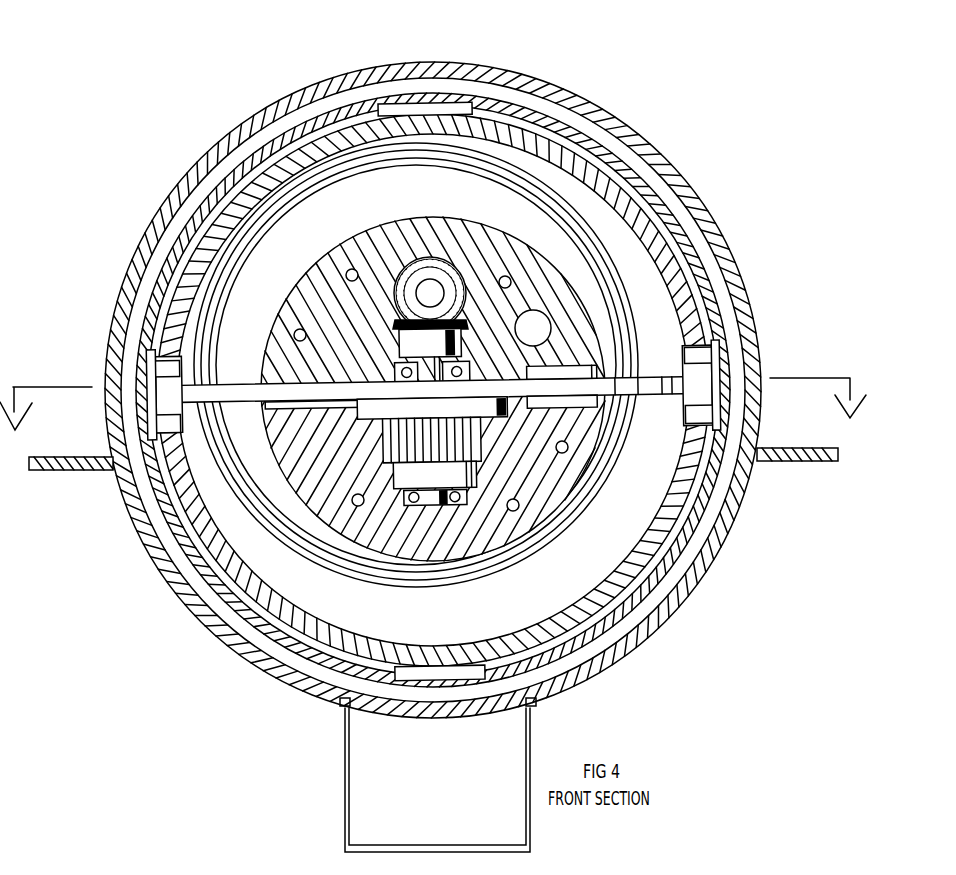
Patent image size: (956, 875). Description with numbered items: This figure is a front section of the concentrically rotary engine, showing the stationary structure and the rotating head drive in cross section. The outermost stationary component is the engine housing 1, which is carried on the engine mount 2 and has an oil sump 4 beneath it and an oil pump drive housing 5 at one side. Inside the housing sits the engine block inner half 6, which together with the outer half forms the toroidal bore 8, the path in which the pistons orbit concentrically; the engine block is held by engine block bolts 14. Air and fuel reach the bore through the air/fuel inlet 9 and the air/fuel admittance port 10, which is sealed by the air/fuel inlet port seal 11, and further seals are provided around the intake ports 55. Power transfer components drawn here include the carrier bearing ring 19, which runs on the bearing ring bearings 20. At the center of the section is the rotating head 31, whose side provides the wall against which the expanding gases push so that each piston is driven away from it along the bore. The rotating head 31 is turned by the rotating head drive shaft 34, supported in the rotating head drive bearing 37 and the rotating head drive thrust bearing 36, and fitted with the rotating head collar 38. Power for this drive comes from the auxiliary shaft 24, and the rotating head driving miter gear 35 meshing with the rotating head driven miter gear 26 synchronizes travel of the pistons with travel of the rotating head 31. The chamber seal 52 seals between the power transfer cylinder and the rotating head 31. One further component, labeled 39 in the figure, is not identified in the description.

The engine housing 1 is at (660, 330).
The engine mount 2 is at (62, 470).
The oil sump 4 is at (530, 742).
The oil pump drive housing 5 is at (433, 389).
The engine block inner half 6 is at (700, 330).
The toroidal bore 8 is at (595, 242).
The air/fuel inlet 9 is at (552, 326).
The air/fuel admittance port 10 is at (600, 375).
The air/fuel inlet port seal 11 is at (560, 402).
The engine block bolt 14 is at (350, 273).
The carrier bearing ring 19 is at (598, 262).
The bearing ring bearings 20 is at (440, 102).
The auxiliary shaft 24 is at (395, 268).
The rotating head driven miter gear 26 is at (405, 258).
The rotating head 31 is at (235, 393).
The rotating head drive shaft 34 is at (405, 360).
The rotating head driving miter gear 35 is at (400, 368).
The rotating head drive thrust bearing 36 is at (440, 492).
The rotating head drive bearing 37 is at (430, 366).
The rotating head collar 38 is at (395, 408).
The motor 39 is at (415, 440).
The chamber seal 52 is at (165, 390).
The intake port seal 55 is at (160, 362).